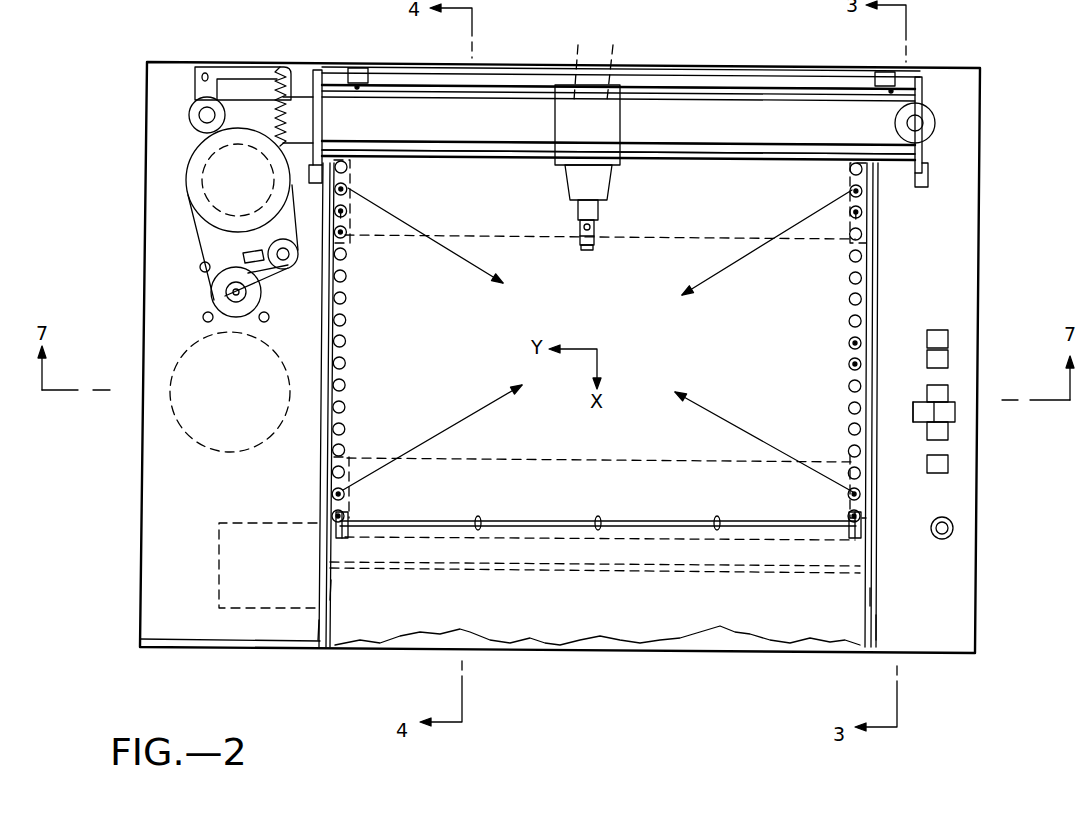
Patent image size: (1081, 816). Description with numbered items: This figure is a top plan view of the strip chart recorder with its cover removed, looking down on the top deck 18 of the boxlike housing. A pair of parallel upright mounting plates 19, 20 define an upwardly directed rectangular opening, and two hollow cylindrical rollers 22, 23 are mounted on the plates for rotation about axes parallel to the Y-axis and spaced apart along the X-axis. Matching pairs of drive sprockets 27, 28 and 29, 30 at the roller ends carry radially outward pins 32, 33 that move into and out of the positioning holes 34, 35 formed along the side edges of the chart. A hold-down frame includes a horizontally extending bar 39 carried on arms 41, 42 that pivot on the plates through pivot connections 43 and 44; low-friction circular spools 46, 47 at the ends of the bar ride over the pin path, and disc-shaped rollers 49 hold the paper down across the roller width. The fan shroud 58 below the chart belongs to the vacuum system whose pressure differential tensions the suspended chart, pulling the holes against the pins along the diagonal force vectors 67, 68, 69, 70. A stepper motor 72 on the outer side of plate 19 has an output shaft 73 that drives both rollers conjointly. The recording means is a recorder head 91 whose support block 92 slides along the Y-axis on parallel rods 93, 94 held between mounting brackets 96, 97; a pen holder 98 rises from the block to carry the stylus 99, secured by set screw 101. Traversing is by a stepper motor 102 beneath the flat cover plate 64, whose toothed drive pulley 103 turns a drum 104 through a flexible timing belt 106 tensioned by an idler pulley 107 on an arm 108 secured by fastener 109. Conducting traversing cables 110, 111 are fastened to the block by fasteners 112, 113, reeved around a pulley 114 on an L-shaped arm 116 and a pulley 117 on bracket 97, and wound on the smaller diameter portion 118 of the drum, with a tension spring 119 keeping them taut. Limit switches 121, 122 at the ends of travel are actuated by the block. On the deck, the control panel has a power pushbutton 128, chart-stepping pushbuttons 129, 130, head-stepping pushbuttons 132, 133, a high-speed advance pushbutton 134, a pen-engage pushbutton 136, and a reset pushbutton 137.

The top deck 18 is at (958, 238).
The upright mounting plate 19 is at (334, 327).
The upright mounting plate 20 is at (868, 314).
The hollow cylindrical roller 22 is at (646, 458).
The hollow cylindrical roller 23 is at (660, 243).
The drive sprocket 27 is at (334, 481).
The drive sprocket 28 is at (866, 485).
The drive sprocket 29 is at (366, 190).
The drive sprocket 30 is at (850, 170).
The sprocket pin 32 is at (348, 186).
The sprocket pin 33 is at (348, 215).
The positioning hole 34 is at (350, 273).
The positioning hole 35 is at (849, 364).
The horizontally extending bar 39 is at (552, 520).
The arm 41 is at (330, 591).
The arm 42 is at (866, 597).
The pivot connection 43 is at (320, 629).
The pivot connection 44 is at (878, 626).
The circular spool 46 is at (342, 538).
The circular spool 47 is at (853, 538).
The disc-shaped roller 49 is at (479, 516).
The cylindrical shroud 58 is at (222, 333).
The flat plate 64 is at (152, 569).
The force vector 67 is at (445, 248).
The force vector 68 is at (466, 418).
The force vector 69 is at (733, 262).
The force vector 70 is at (731, 423).
The stepper motor 72 is at (240, 510).
The output shaft 73 is at (631, 572).
The recorder head 91 is at (626, 174).
The support block 92 is at (610, 124).
The rod 93 is at (688, 86).
The rod 94 is at (686, 152).
The mounting bracket 96 is at (318, 124).
The mounting bracket 97 is at (922, 93).
The pen holder 98 is at (600, 209).
The marking instrument 99 is at (579, 229).
The set screw 101 is at (588, 251).
The stepper motor 102 is at (212, 292).
The toothed drive pulley 103 is at (222, 301).
The drum 104 is at (188, 176).
The flexible timing belt 106 is at (206, 248).
The idler pulley 107 is at (292, 270).
The arm 108 is at (262, 250).
The fastener 109 is at (262, 254).
The traversing cable 110 is at (462, 103).
The traversing cable 111 is at (482, 143).
The fastener 112 is at (559, 61).
The fastener 113 is at (632, 61).
The pulley 114 is at (188, 116).
The L-shaped arm 116 is at (244, 68).
The pulley 117 is at (933, 126).
The smaller diameter portion 118 is at (215, 198).
The tension spring 119 is at (290, 80).
The limit switch 121 is at (357, 67).
The limit switch 122 is at (887, 72).
The power on/off pushbutton 128 is at (954, 529).
The pushbutton 129 is at (926, 421).
The pushbutton 130 is at (950, 413).
The pushbutton 132 is at (931, 439).
The pushbutton 133 is at (931, 393).
The pushbutton 134 is at (940, 359).
The pushbutton 136 is at (940, 336).
The pushbutton 137 is at (946, 463).